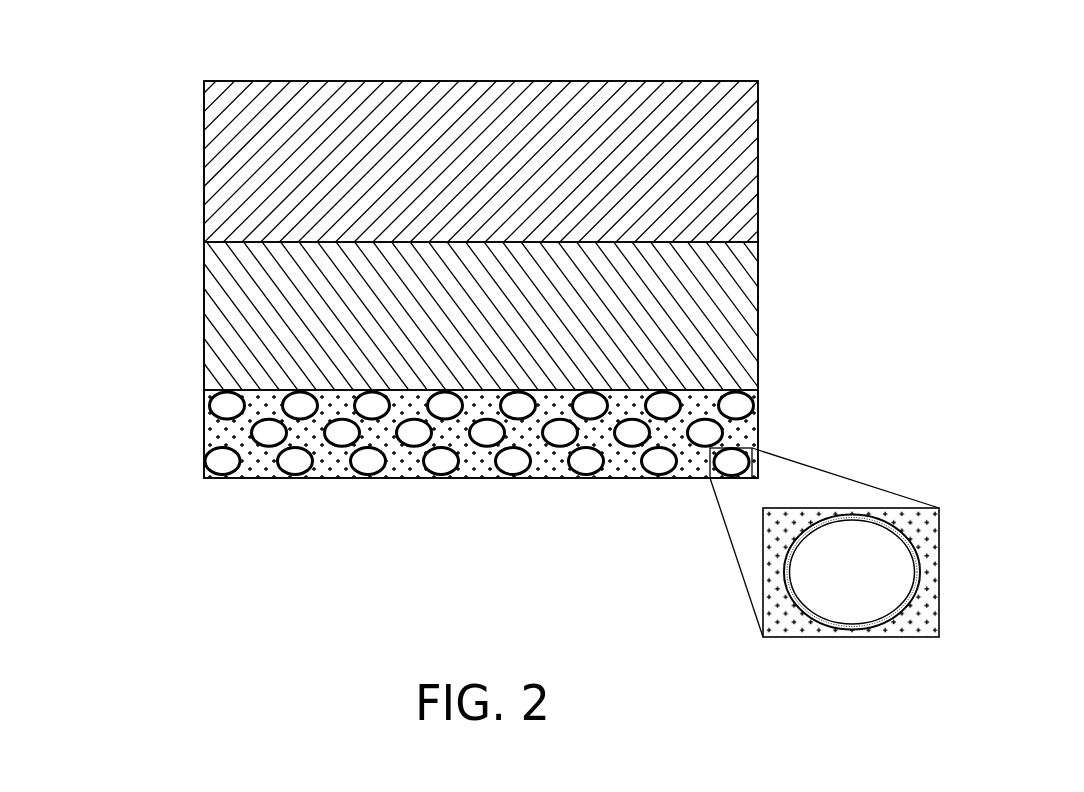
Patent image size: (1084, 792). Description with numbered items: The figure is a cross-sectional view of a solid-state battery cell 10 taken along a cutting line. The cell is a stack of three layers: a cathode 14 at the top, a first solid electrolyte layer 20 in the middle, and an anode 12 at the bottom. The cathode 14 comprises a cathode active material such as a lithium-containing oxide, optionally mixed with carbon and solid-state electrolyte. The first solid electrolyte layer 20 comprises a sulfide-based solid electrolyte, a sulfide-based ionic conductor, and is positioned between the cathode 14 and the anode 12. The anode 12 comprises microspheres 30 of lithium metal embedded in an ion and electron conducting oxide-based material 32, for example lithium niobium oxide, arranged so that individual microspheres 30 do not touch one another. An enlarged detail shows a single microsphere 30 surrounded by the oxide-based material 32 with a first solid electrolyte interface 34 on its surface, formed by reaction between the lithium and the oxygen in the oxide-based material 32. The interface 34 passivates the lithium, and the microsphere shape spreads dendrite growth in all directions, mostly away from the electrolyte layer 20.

The solid-state battery cell 10 is at (128, 75).
The anode 12 is at (205, 424).
The cathode 14 is at (760, 164).
The first solid electrolyte layer 20 is at (760, 306).
The microspheres 30 is at (295, 462).
The ion and electron conducting oxide-based material 32 is at (405, 462).
The first solid electrolyte interface 34 is at (498, 472).